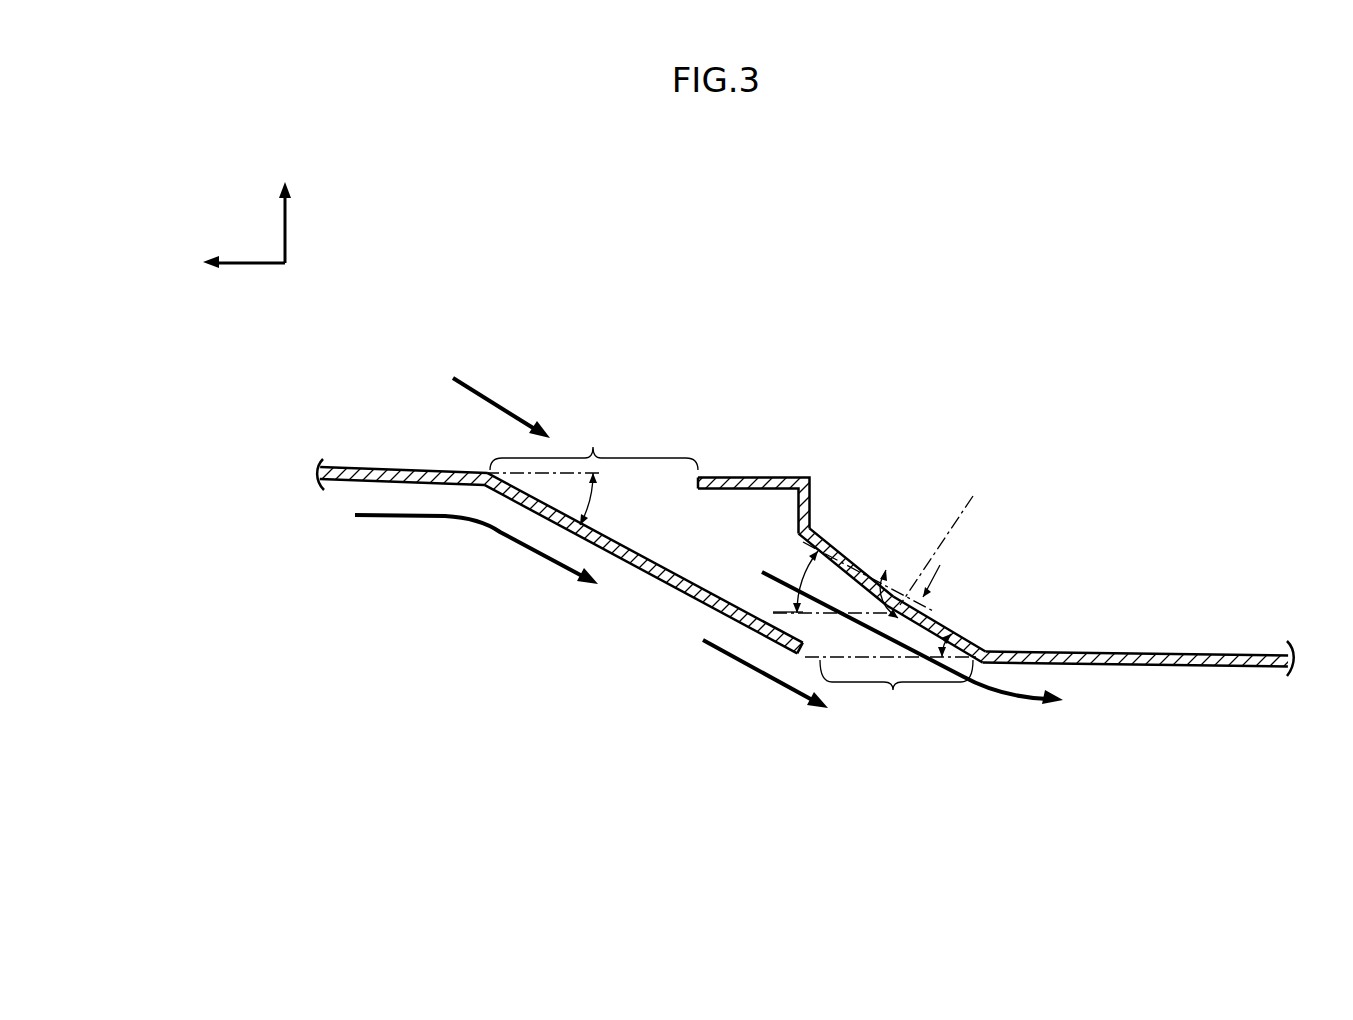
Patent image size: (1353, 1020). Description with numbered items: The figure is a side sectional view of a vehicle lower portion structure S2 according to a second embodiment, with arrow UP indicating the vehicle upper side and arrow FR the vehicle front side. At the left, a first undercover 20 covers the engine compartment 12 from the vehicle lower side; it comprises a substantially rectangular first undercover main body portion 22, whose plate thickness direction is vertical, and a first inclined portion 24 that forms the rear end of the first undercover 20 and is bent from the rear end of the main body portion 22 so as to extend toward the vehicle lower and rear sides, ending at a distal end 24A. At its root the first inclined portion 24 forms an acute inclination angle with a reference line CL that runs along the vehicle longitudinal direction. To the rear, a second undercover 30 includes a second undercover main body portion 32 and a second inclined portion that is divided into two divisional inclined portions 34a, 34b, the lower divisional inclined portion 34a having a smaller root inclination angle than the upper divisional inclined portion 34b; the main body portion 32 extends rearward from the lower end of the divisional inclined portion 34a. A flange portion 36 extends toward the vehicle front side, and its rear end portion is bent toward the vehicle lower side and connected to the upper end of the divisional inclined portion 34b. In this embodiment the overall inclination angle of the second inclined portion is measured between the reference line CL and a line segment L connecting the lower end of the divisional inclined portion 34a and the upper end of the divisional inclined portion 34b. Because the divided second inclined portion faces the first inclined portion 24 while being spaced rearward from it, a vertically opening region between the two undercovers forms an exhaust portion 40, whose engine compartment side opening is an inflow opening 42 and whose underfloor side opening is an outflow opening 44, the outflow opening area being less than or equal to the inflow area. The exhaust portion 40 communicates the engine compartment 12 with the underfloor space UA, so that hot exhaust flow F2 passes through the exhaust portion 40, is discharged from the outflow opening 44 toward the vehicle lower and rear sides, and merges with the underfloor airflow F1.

The engine compartment 12 is at (320, 403).
The first undercover 20 is at (403, 466).
The first undercover main body portion 22 is at (353, 481).
The first inclined portion 24 is at (625, 567).
The distal end of first inclined portion 24A is at (806, 660).
The second undercover 30 is at (1244, 644).
The second undercover main body portion 32 is at (1140, 650).
The divisional inclined portion 34a is at (925, 615).
The divisional inclined portion 34b is at (858, 558).
The flange portion 36 is at (754, 476).
The exhaust portion 40 is at (705, 541).
The inflow opening 42 is at (597, 442).
The outflow opening 44 is at (893, 688).
The line segment L is at (975, 500).
The reference line CL is at (778, 610).
The underfloor airflow F1 is at (422, 520).
The exhaust flow F2 is at (500, 403).
The vehicle lower portion structure S2 is at (594, 750).
The underfloor space UA is at (827, 835).
The vehicle upper direction UP is at (286, 207).
The vehicle front direction FR is at (227, 259).